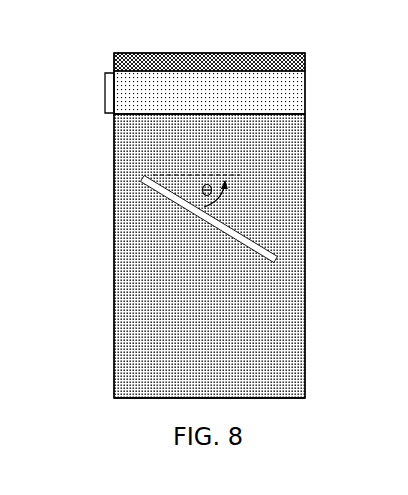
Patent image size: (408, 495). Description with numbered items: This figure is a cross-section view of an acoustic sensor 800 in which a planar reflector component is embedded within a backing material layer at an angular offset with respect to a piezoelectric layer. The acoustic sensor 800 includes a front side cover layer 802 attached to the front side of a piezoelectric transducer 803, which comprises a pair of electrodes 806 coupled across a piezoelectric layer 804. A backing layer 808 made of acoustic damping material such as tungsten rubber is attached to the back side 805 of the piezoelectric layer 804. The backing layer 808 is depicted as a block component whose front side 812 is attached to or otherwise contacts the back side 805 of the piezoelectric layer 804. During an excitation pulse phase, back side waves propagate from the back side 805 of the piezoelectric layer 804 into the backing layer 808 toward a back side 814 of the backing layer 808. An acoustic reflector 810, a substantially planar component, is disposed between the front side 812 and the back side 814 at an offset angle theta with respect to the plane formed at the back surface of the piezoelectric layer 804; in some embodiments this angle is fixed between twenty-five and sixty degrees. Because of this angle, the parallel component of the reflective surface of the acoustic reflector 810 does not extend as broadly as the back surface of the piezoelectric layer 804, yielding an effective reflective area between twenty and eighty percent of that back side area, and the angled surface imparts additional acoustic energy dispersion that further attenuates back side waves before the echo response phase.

The acoustic sensor 800 is at (101, 221).
The front side cover layer 802 is at (243, 63).
The piezoelectric transducer 803 is at (105, 93).
The piezoelectric layer 804 is at (176, 90).
The back side of piezoelectric layer 805 is at (239, 108).
The pair of electrodes 806 is at (122, 74).
The backing layer 808 is at (155, 262).
The acoustic reflector 810 is at (222, 237).
The front side of backing layer 812 is at (222, 117).
The back side of backing layer 814 is at (222, 394).